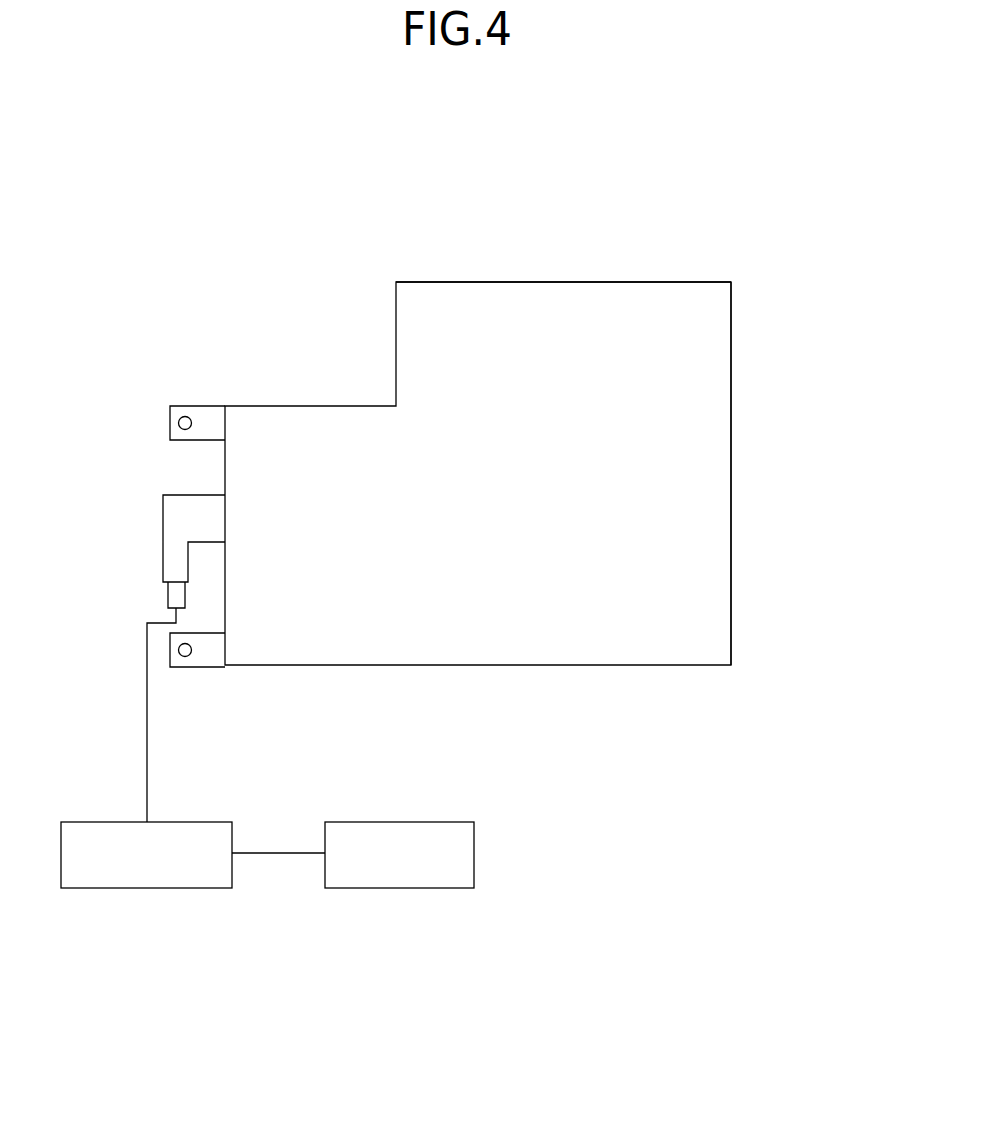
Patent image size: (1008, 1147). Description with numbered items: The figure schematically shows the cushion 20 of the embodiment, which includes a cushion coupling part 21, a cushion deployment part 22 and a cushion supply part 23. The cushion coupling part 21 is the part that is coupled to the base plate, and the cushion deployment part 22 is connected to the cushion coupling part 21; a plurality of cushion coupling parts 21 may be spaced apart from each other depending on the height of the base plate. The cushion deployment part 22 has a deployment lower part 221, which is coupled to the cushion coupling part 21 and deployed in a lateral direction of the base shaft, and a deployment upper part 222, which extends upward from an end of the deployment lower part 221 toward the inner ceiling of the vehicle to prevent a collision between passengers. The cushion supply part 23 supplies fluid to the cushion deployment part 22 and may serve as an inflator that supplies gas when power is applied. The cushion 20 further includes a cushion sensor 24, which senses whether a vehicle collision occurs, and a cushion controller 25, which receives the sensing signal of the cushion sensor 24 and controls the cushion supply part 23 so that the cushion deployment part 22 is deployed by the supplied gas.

The cushion 20 is at (808, 144).
The cushion coupling part 21 is at (172, 410).
The cushion deployment part 22 is at (815, 383).
The deployment lower part 221 is at (731, 547).
The deployment upper part 222 is at (700, 282).
The cushion supply part 23 is at (167, 532).
The cushion sensor 24 is at (397, 888).
The cushion controller 25 is at (143, 888).